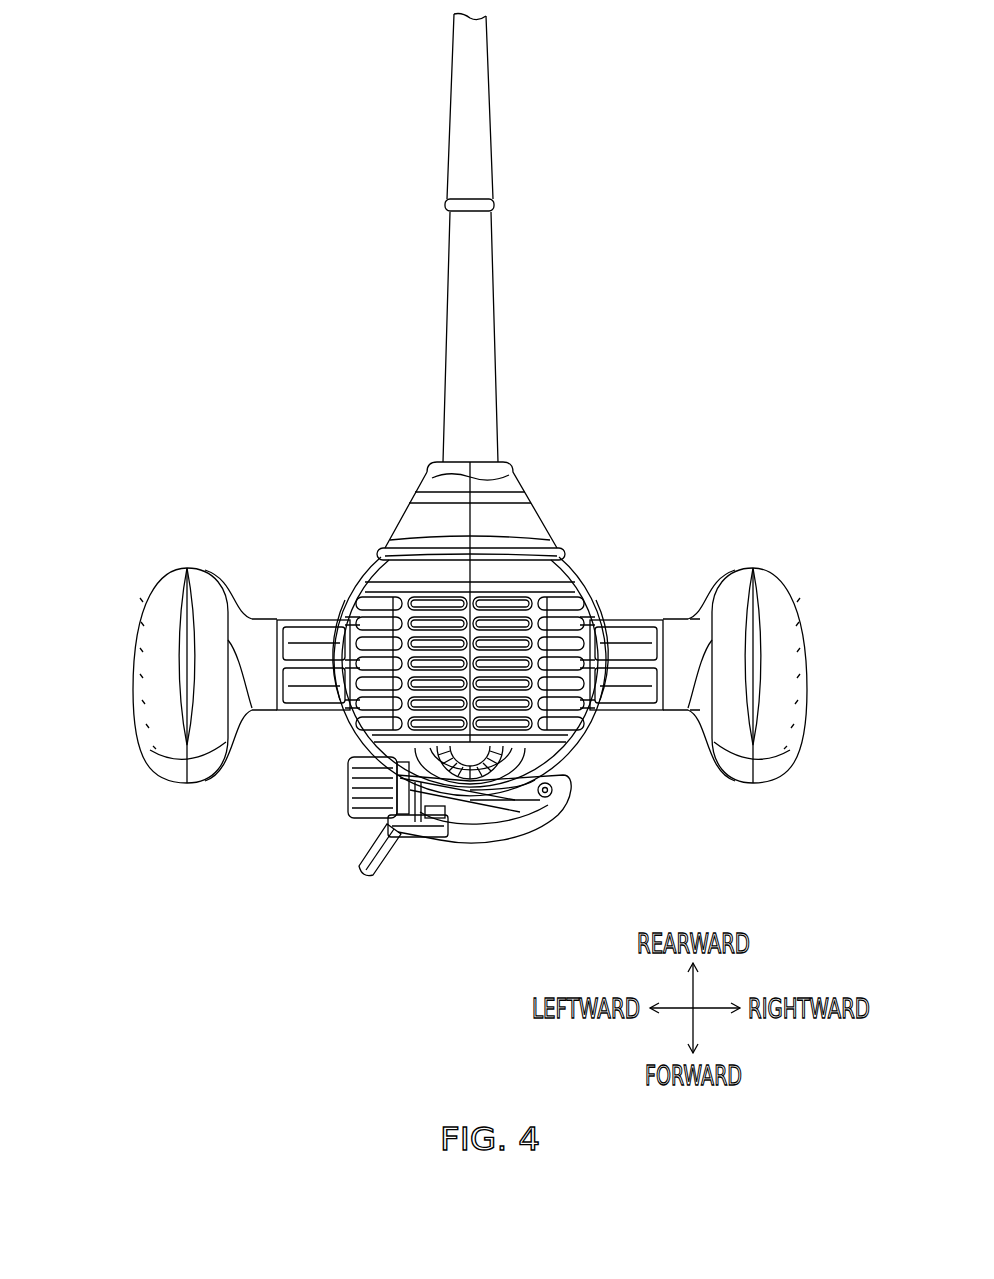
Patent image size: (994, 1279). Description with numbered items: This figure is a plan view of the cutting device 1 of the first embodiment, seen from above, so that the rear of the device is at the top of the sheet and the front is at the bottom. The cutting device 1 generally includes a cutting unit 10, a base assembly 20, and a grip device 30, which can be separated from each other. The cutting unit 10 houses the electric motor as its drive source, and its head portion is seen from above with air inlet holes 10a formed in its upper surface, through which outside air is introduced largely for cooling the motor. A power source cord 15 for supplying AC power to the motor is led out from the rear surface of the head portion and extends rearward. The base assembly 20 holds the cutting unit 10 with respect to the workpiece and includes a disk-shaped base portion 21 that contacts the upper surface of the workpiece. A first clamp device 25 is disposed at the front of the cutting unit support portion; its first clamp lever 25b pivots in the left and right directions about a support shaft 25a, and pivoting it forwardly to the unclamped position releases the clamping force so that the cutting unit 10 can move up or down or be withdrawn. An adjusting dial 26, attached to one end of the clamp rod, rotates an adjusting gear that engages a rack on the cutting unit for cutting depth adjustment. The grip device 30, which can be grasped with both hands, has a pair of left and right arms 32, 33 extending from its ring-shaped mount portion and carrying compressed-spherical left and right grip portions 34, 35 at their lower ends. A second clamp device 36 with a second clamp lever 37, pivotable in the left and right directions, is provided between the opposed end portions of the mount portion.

The cutting device 1 is at (236, 458).
The power source cord 15 is at (488, 317).
The cutting unit 10 is at (530, 571).
The air inlet holes 10a is at (437, 622).
The base assembly 20 is at (340, 593).
The base portion 21 is at (587, 607).
The grip device 30 is at (681, 586).
The left grip portion 34 is at (133, 666).
The right grip portion 35 is at (797, 666).
The left arm 32 is at (302, 705).
The right arm 33 is at (638, 705).
The first clamp device 25 is at (548, 845).
The support shaft 25a is at (553, 791).
The first clamp lever 25b is at (503, 842).
The adjusting dial 26 is at (348, 788).
The second clamp device 36 is at (410, 878).
The second clamp lever 37 is at (462, 824).